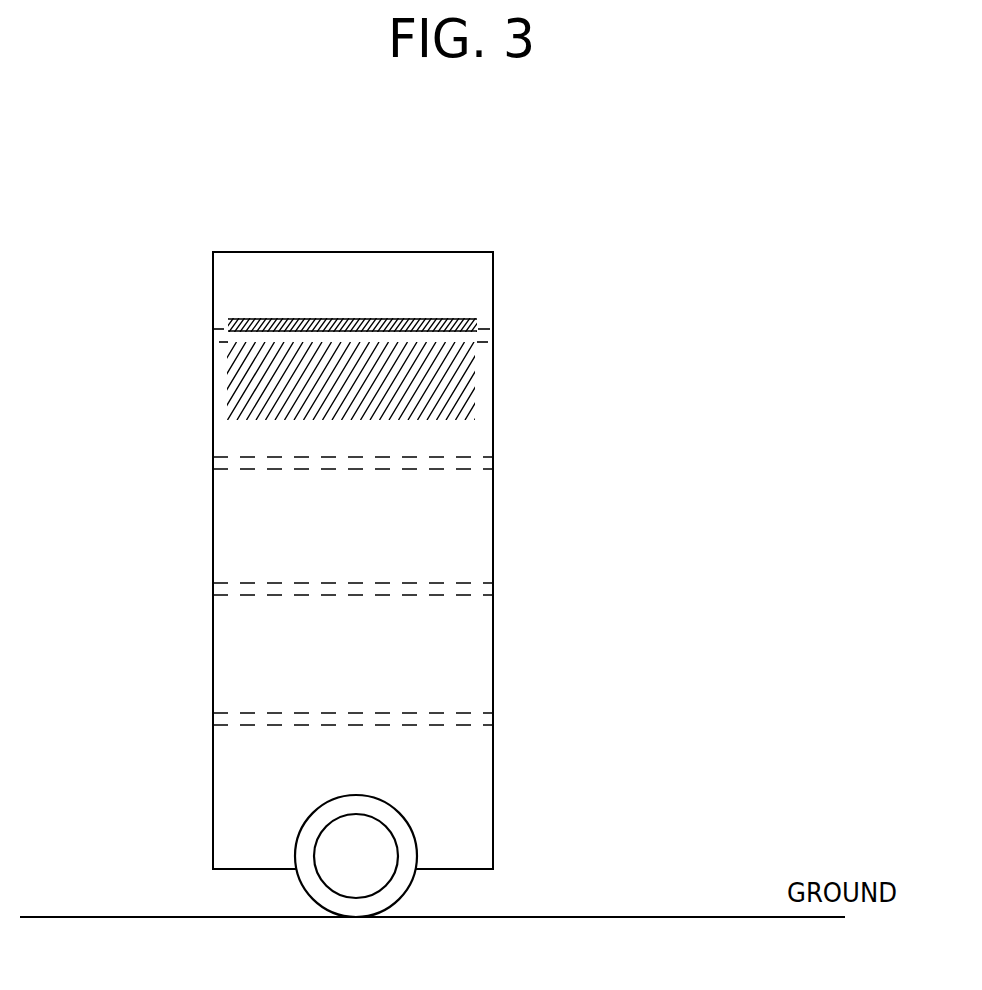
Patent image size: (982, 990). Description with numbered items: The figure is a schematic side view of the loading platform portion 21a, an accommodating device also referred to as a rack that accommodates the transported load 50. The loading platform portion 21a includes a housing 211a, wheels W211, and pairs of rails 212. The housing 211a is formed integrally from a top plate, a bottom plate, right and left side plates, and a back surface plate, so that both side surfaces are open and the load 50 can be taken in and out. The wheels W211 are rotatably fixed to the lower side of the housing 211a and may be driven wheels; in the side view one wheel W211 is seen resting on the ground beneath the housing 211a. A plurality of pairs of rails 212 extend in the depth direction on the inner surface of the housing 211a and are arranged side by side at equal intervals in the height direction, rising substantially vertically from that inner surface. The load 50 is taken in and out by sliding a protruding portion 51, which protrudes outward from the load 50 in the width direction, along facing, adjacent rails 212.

The loading platform portion 21a is at (262, 178).
The housing 211a is at (412, 252).
The protruding portion 51 is at (477, 323).
The rail 212 is at (480, 337).
The load 50 is at (477, 393).
The wheel W211 is at (417, 855).